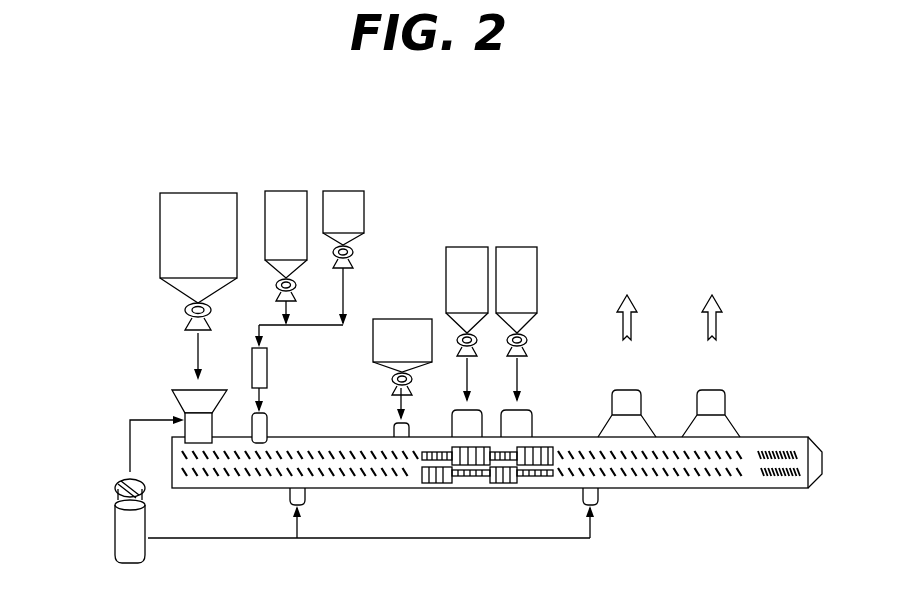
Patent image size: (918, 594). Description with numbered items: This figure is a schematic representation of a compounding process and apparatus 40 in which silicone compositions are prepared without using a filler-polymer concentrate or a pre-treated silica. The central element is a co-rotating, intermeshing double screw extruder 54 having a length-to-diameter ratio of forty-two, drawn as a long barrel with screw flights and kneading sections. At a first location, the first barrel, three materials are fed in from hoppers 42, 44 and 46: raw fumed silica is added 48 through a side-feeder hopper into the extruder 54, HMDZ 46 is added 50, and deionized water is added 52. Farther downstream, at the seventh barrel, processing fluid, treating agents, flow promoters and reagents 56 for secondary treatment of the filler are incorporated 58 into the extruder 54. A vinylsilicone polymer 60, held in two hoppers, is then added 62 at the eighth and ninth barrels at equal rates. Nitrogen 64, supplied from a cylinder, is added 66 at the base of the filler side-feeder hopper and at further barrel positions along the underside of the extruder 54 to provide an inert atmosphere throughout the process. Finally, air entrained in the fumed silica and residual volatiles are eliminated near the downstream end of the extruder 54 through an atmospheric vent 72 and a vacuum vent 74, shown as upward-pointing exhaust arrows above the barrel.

The process and apparatus 40 is at (506, 157).
The first feed hopper 42 is at (198, 193).
The second feed hopper 44 is at (286, 191).
The HMDZ 46 is at (347, 191).
The addition of raw fumed silica 48 is at (197, 350).
The addition of HMDZ 50 is at (285, 310).
The addition of deionized water 52 is at (345, 281).
The co-rotating, intermeshing double screw extruder 54 is at (221, 489).
The processing fluid, treating agents, flow promoters and reagents 56 is at (402, 319).
The incorporation of processing fluid and reagents 58 is at (400, 396).
The vinylsilicone polymer 60 is at (508, 247).
The addition of vinylsilicone polymer 62 is at (467, 368).
The nitrogen 64 is at (112, 547).
The addition of nitrogen 66 is at (130, 438).
The atmospheric vent 72 is at (642, 403).
The vacuum vent 74 is at (726, 404).